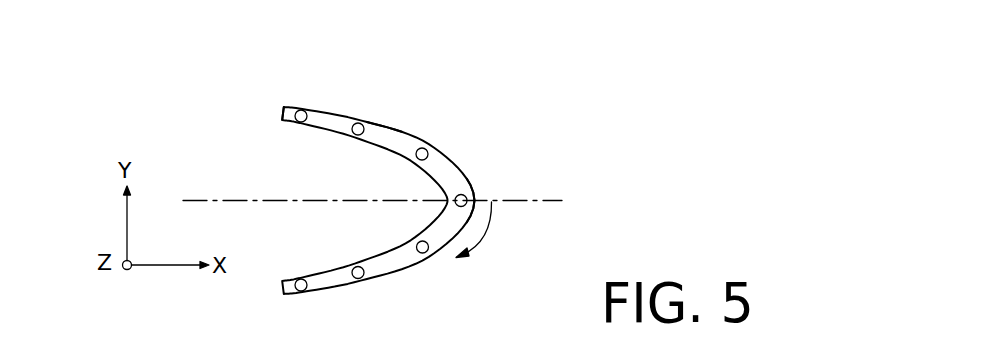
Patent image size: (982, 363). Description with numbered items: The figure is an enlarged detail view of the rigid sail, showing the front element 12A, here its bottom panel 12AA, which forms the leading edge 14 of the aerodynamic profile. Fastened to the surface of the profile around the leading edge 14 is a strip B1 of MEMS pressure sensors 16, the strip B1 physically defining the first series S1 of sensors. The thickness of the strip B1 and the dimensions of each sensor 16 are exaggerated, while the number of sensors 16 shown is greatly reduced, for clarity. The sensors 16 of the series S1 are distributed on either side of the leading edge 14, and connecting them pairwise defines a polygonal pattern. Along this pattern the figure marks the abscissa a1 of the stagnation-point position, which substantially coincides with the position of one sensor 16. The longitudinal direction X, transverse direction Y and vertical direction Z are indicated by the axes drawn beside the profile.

The front element 12A is at (449, 200).
The bottom panel 12AA is at (432, 145).
The leading edge 14 is at (477, 200).
The pressure sensors 16 is at (301, 110).
The strip B1 is at (385, 137).
The series S1 is at (283, 112).
The abscissa a1 is at (488, 230).